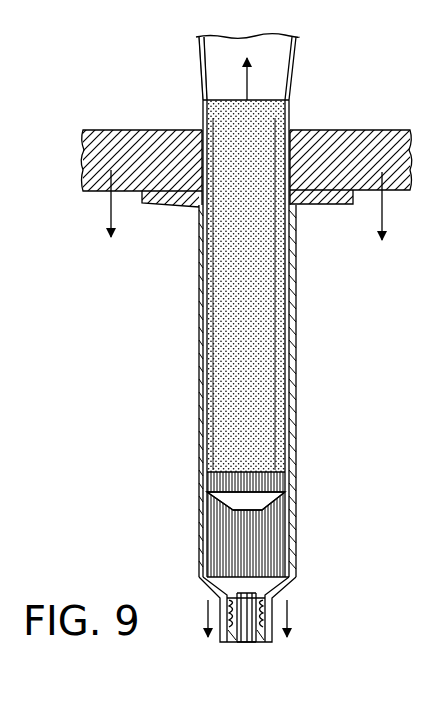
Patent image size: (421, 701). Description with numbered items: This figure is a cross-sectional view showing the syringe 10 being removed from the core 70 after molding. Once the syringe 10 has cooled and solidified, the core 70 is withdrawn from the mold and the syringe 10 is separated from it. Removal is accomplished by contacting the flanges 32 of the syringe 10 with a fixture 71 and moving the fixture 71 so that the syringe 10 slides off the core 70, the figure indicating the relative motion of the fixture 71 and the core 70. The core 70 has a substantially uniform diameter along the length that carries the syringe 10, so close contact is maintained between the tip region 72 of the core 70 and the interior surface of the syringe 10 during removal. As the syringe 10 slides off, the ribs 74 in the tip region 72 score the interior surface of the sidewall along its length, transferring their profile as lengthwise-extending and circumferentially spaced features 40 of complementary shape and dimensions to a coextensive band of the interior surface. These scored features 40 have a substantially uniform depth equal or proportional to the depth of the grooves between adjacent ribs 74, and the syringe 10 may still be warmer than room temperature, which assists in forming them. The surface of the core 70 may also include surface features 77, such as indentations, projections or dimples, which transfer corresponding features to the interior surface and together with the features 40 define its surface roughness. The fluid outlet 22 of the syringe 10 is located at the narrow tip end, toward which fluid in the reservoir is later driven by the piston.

The syringe 10 is at (197, 320).
The core 70 is at (197, 65).
The fixture 71 is at (345, 128).
The flanges 32 is at (318, 206).
The surface features 77 is at (258, 301).
The ribs 74 is at (233, 482).
The tip region 72 is at (295, 481).
The features 40 is at (278, 565).
The fluid outlet 22 is at (247, 618).